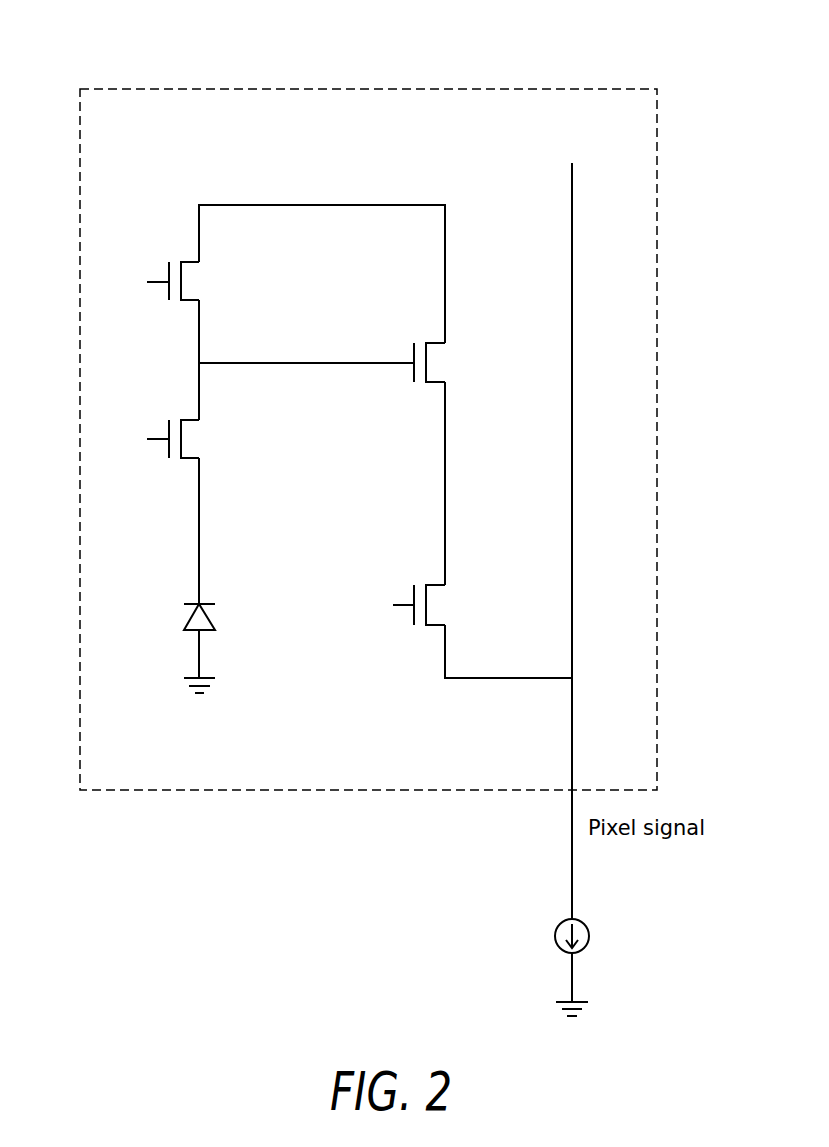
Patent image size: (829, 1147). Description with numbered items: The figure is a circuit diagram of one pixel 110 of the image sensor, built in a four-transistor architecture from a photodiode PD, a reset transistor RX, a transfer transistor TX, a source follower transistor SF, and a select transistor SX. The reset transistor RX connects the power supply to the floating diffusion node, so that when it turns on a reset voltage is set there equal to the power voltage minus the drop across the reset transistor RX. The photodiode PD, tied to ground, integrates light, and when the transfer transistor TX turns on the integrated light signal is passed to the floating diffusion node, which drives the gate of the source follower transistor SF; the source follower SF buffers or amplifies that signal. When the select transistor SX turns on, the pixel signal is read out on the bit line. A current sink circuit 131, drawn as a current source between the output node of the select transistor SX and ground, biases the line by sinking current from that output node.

The pixel 110 is at (368, 466).
The current sink circuit 131 is at (590, 932).
The reset transistor RX is at (195, 281).
The transfer transistor TX is at (195, 439).
The photodiode PD is at (221, 647).
The source follower transistor SF is at (450, 362).
The select transistor SX is at (441, 605).